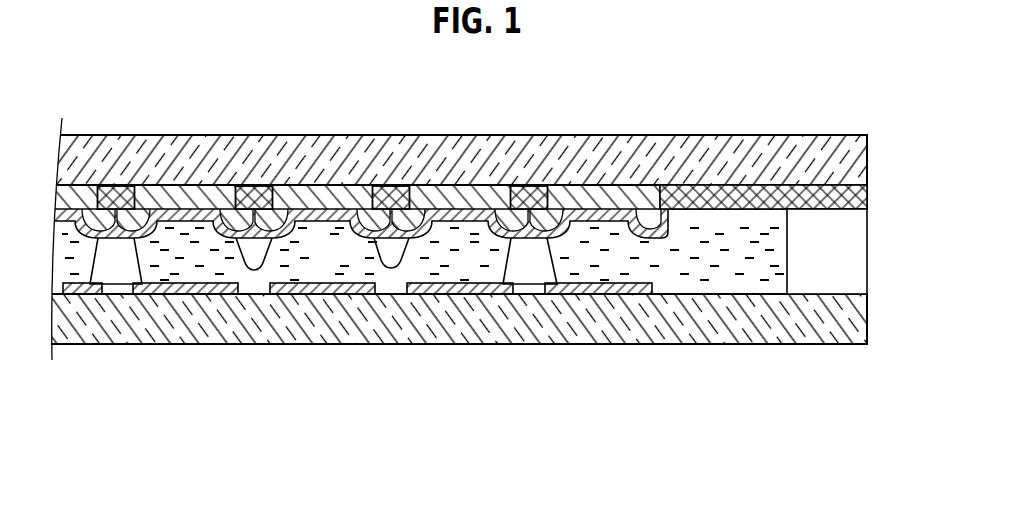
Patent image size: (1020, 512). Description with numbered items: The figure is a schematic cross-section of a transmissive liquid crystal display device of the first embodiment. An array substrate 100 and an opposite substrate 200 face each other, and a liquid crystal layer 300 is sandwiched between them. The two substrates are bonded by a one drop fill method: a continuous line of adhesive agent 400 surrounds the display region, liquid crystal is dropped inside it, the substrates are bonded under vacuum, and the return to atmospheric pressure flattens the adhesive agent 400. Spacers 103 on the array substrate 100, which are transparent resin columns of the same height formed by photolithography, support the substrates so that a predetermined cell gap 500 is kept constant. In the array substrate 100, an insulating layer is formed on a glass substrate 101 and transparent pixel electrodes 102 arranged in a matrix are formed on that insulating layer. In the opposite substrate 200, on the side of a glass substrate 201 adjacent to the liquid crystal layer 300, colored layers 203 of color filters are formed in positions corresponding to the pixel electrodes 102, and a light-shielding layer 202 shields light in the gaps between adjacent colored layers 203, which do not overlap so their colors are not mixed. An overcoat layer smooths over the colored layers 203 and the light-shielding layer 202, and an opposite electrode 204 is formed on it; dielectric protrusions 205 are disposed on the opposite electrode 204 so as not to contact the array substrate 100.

The array substrate 100 is at (868, 322).
The glass substrate 101 is at (833, 337).
The pixel electrodes 102 is at (632, 285).
The spacers 103 is at (530, 293).
The opposite substrate 200 is at (867, 155).
The glass substrate 201 is at (828, 138).
The light-shielding layer 202 is at (523, 202).
The colored layers 203 is at (430, 193).
The opposite electrode 204 is at (330, 212).
The protrusions 205 is at (259, 279).
The liquid crystal layer 300 is at (718, 280).
The adhesive agent 400 is at (808, 285).
The cell gap 500 is at (315, 222).